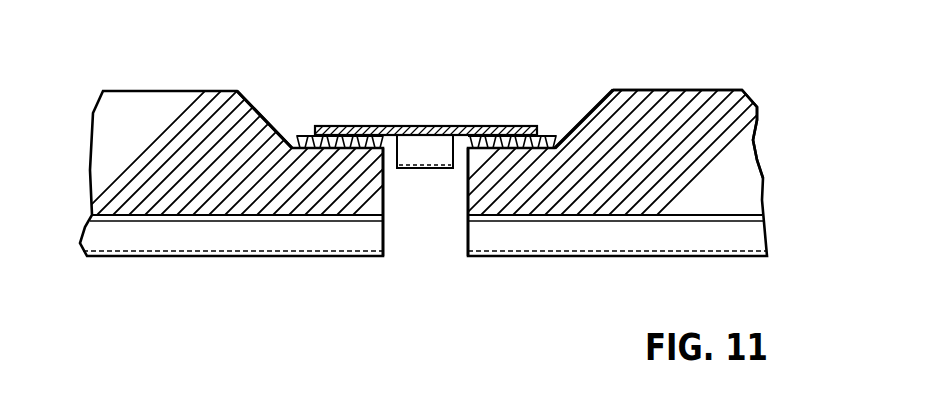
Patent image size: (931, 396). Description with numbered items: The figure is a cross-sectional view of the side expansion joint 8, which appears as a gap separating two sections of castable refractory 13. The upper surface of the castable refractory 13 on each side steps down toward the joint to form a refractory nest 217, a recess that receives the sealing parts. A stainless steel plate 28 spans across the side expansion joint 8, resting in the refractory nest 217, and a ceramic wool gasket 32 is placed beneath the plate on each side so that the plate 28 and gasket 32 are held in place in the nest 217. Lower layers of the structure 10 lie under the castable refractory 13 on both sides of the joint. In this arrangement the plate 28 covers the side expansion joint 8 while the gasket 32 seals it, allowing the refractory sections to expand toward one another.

The side expansion joint 8 is at (418, 192).
The substrate 10 is at (88, 178).
The castable refractory 13 is at (723, 105).
The stainless steel plate 28 is at (420, 125).
The ceramic wool gasket 32 is at (305, 132).
The refractory nest 217 is at (290, 146).